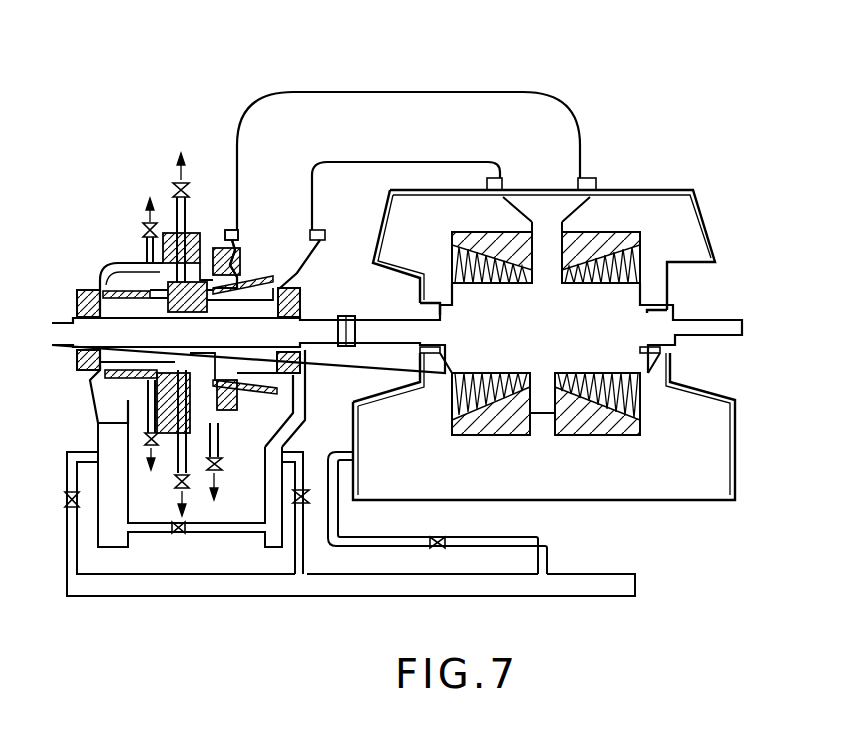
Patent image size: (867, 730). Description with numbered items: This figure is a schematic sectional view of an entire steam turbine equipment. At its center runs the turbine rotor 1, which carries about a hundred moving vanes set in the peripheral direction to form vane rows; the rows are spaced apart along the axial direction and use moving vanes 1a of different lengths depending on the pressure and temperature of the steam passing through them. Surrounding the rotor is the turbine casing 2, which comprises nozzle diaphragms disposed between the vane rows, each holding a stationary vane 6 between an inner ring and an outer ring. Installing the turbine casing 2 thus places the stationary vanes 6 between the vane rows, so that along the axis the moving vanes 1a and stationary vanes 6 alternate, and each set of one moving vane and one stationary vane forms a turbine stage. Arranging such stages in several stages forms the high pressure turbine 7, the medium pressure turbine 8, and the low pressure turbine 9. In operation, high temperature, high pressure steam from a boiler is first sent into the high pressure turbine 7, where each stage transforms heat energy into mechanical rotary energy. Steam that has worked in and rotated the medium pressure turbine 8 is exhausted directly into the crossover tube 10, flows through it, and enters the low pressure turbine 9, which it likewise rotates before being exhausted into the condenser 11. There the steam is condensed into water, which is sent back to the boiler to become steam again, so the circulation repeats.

The turbine rotor 1 is at (92, 338).
The moving vanes 1a is at (452, 260).
The turbine casing 2 is at (595, 242).
The stationary vane 6 is at (623, 240).
The high pressure turbine 7 is at (96, 250).
The medium pressure turbine 8 is at (215, 207).
The low pressure turbine 9 is at (688, 176).
The crossover tube 10 is at (423, 93).
The condenser 11 is at (740, 438).